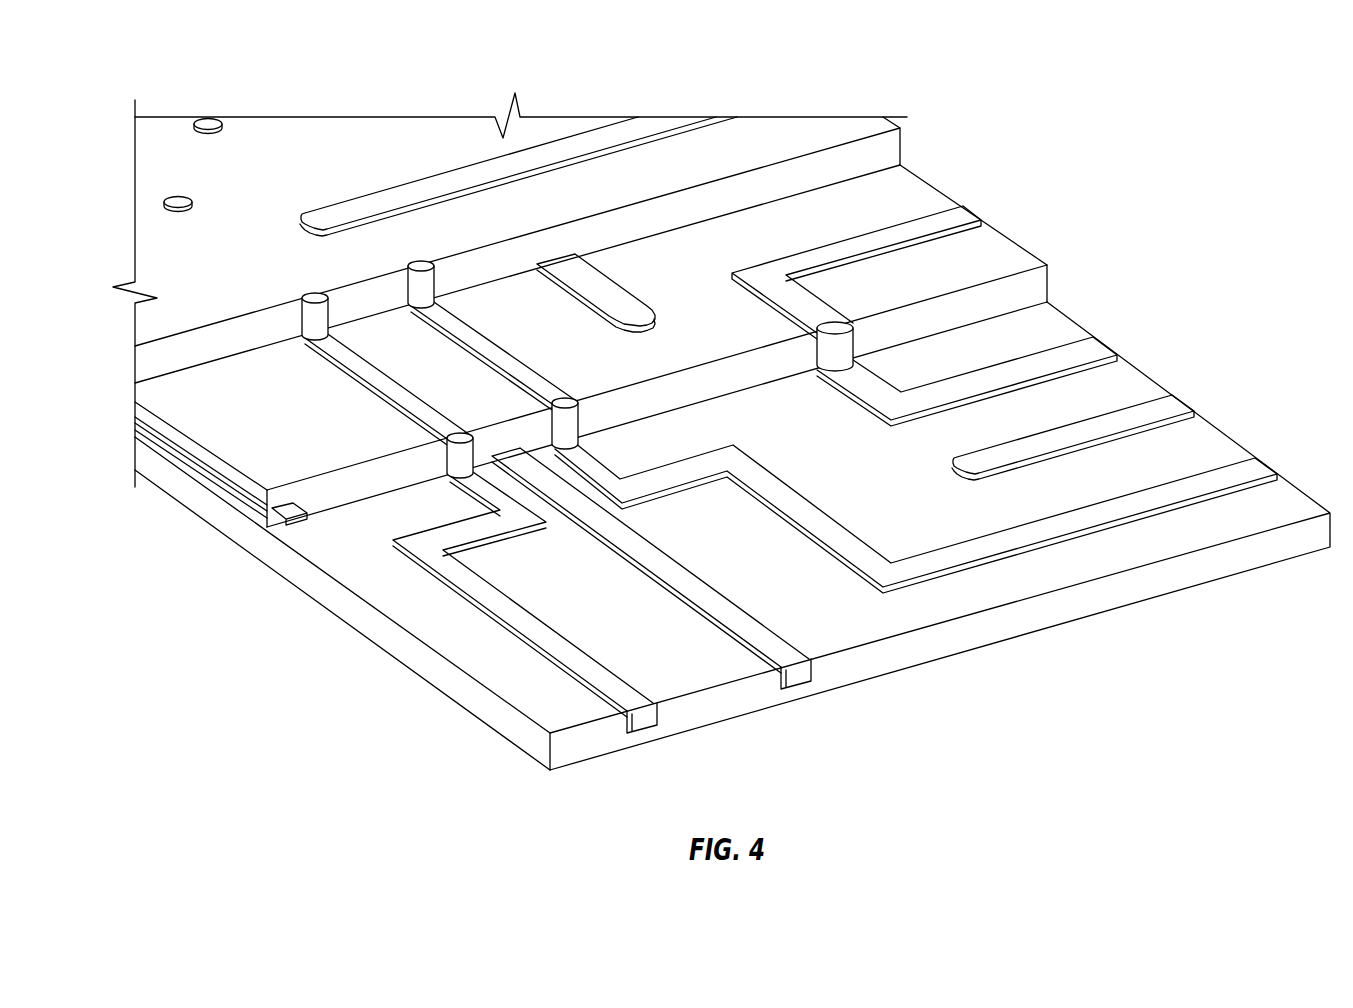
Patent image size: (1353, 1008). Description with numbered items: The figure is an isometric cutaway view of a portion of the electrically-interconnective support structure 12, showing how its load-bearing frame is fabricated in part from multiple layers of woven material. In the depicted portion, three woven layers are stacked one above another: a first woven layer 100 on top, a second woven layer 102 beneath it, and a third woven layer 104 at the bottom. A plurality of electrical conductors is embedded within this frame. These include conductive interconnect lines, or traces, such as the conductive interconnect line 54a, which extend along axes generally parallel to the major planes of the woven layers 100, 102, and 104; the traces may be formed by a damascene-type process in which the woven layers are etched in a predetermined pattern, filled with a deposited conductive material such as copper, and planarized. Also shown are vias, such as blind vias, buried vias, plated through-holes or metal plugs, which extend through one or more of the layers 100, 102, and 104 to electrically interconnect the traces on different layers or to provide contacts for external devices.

The electrically-interconnective support structure 12 is at (140, 167).
The first woven layer 100 is at (867, 130).
The second woven layer 102 is at (930, 196).
The third woven layer 104 is at (1066, 326).
The conductive interconnect line 54a is at (195, 470).